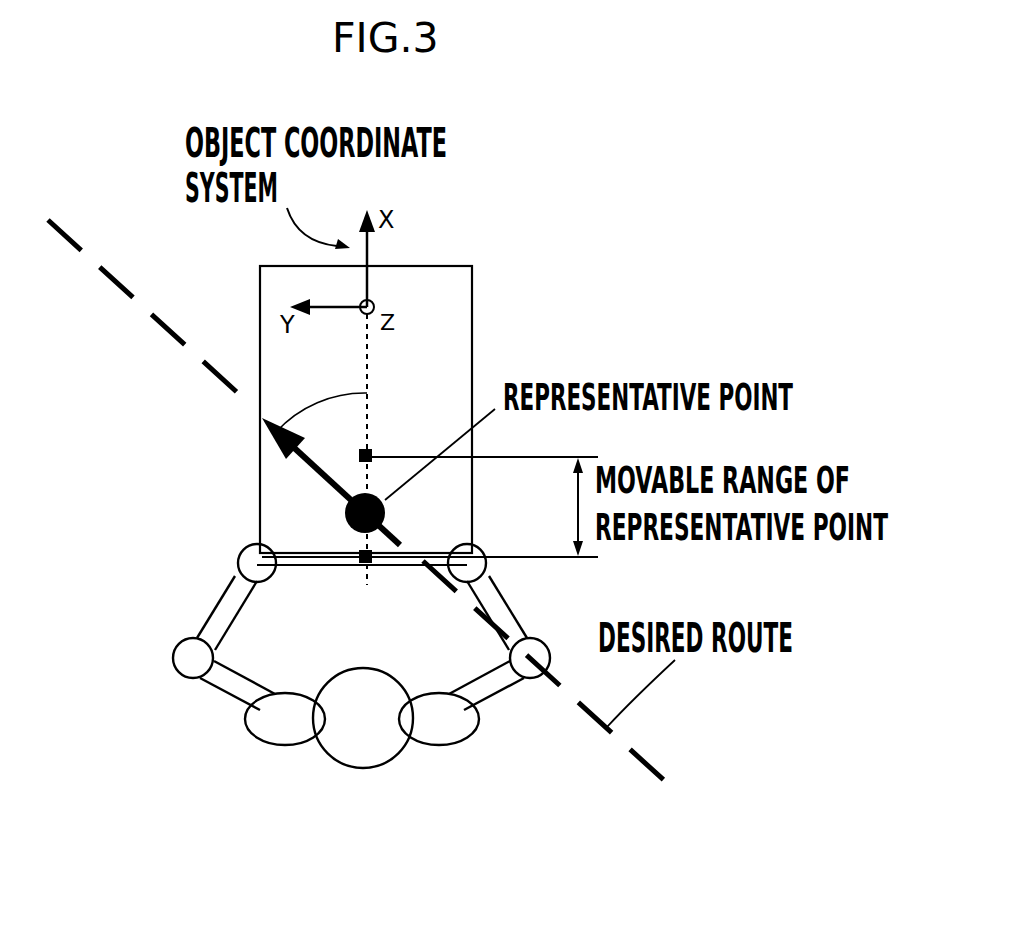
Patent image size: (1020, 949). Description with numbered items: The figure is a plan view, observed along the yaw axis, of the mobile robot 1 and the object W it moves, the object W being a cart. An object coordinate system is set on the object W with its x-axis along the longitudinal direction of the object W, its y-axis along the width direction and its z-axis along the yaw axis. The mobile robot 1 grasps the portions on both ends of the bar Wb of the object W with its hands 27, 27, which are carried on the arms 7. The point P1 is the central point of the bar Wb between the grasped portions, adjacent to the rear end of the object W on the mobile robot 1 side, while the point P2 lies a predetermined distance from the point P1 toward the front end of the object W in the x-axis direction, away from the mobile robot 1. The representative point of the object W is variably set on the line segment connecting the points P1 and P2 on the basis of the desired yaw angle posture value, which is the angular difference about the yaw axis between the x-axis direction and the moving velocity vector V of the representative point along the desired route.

The mobile robot 1 is at (371, 692).
The arm 7 is at (206, 704).
The hand 27 is at (248, 558).
The object W is at (473, 328).
The bar Wb is at (313, 558).
The point P1 is at (373, 563).
The point P2 is at (372, 447).
The moving velocity vector V is at (322, 478).